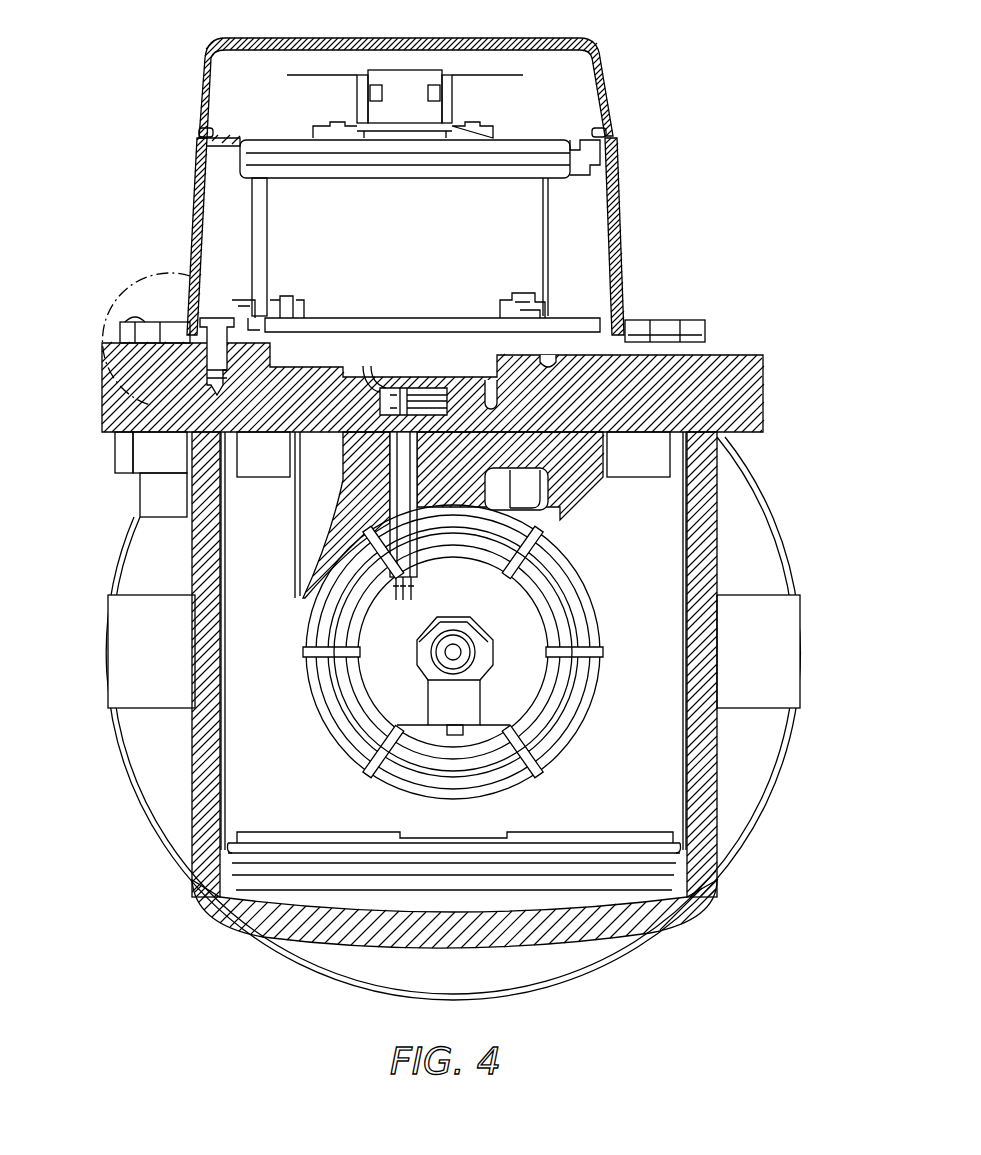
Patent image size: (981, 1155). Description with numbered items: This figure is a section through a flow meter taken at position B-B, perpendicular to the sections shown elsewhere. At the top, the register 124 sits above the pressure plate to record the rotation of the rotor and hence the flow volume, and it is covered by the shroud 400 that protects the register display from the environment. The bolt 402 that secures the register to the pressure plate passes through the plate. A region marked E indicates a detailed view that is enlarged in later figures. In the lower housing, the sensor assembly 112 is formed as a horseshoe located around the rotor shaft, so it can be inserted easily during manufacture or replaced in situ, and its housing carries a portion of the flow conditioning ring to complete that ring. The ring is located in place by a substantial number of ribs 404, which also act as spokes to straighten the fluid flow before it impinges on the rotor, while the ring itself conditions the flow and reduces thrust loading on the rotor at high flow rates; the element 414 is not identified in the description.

The shroud 400 is at (611, 97).
The register 124 is at (620, 210).
The bolt 402 is at (213, 357).
The ribs 404 is at (322, 650).
The stator ring 414 is at (352, 712).
The sensor assembly 112 is at (520, 675).
The detailed view E is at (182, 300).